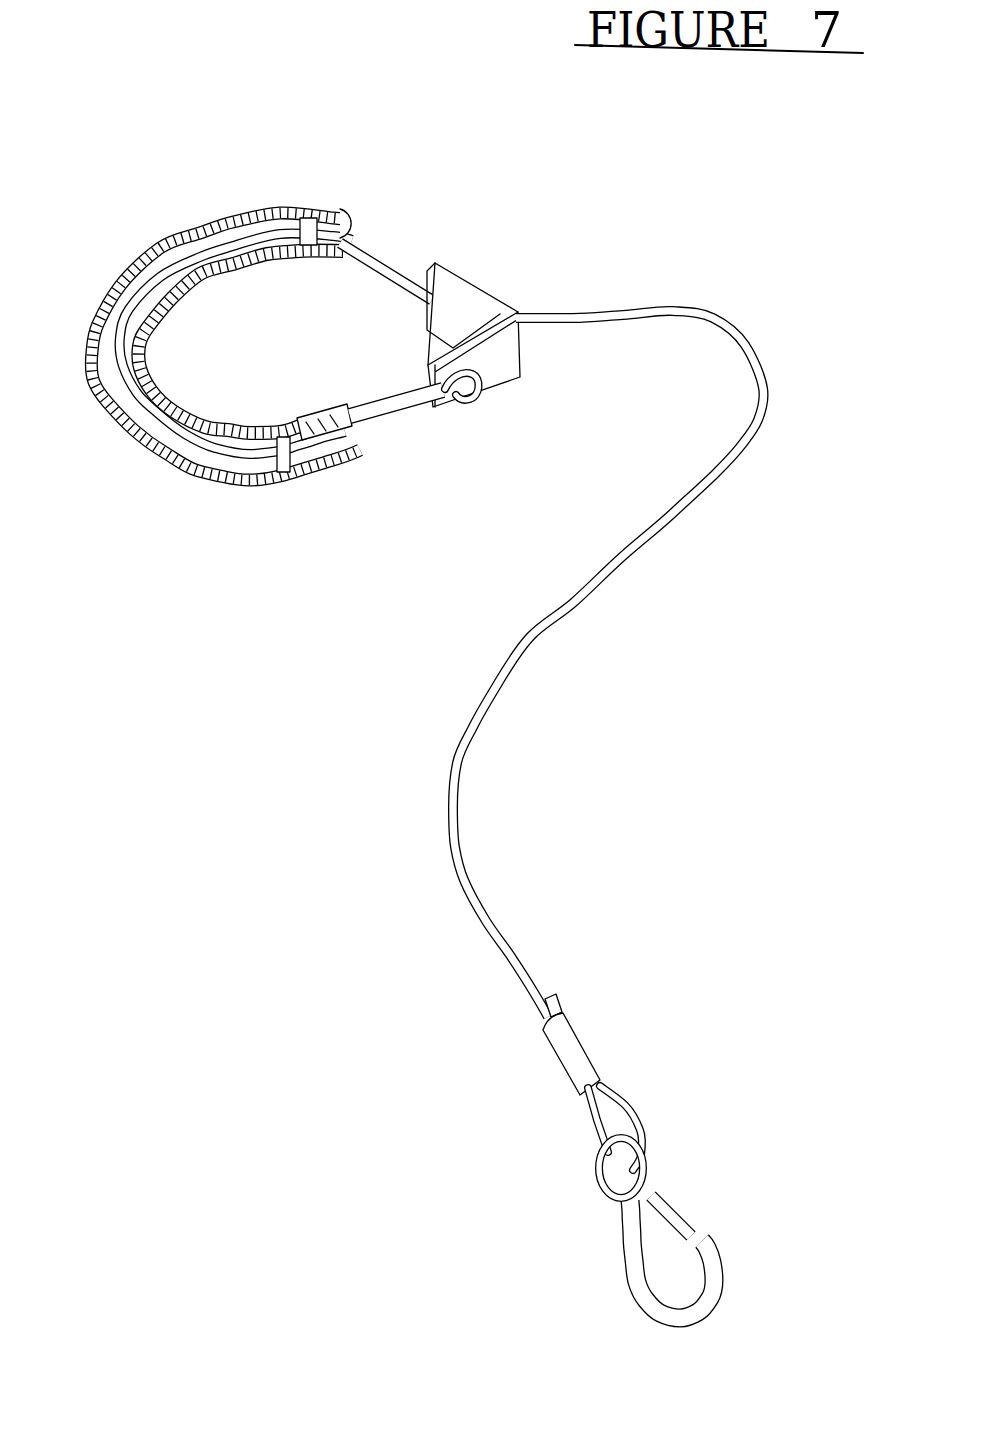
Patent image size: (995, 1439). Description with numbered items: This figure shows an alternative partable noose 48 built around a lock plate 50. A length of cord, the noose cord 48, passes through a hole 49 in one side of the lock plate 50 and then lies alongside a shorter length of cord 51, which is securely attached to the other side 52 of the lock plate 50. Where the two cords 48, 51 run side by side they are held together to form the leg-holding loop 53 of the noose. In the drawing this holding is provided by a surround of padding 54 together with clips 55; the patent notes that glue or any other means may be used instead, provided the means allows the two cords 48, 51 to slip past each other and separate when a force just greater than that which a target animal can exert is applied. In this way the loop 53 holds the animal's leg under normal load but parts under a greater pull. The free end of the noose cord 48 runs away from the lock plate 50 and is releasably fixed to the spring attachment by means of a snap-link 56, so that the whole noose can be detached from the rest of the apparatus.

The partable noose cord 48 is at (452, 807).
The hole 49 is at (432, 266).
The lock plate 50 is at (497, 348).
The shorter length of cord 51 is at (198, 458).
The other side of the lock plate 52 is at (473, 378).
The leg-holding loop 53 is at (233, 362).
The surround of padding 54 is at (157, 243).
The clips 55 is at (283, 437).
The snap-link 56 is at (673, 1213).